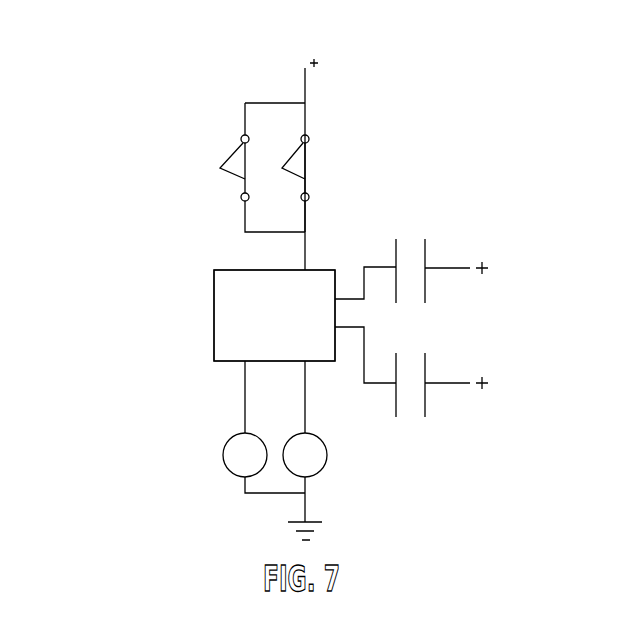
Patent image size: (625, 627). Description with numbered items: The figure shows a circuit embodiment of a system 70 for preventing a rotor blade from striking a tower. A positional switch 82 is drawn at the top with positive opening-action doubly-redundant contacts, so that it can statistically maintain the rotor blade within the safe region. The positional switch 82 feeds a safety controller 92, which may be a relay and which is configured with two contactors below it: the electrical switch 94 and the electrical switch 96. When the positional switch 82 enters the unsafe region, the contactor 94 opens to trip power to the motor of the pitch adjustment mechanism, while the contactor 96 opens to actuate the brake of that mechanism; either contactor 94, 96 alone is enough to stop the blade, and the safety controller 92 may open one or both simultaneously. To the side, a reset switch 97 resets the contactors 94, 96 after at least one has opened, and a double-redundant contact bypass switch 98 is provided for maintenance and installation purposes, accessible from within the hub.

The system 70 is at (135, 183).
The positional switch 82 is at (315, 168).
The safety controller 92 is at (284, 325).
The electrical switch 94 is at (224, 447).
The electrical switch 96 is at (327, 450).
The reset switch 97 is at (425, 252).
The double-redundant contact bypass switch 98 is at (425, 365).